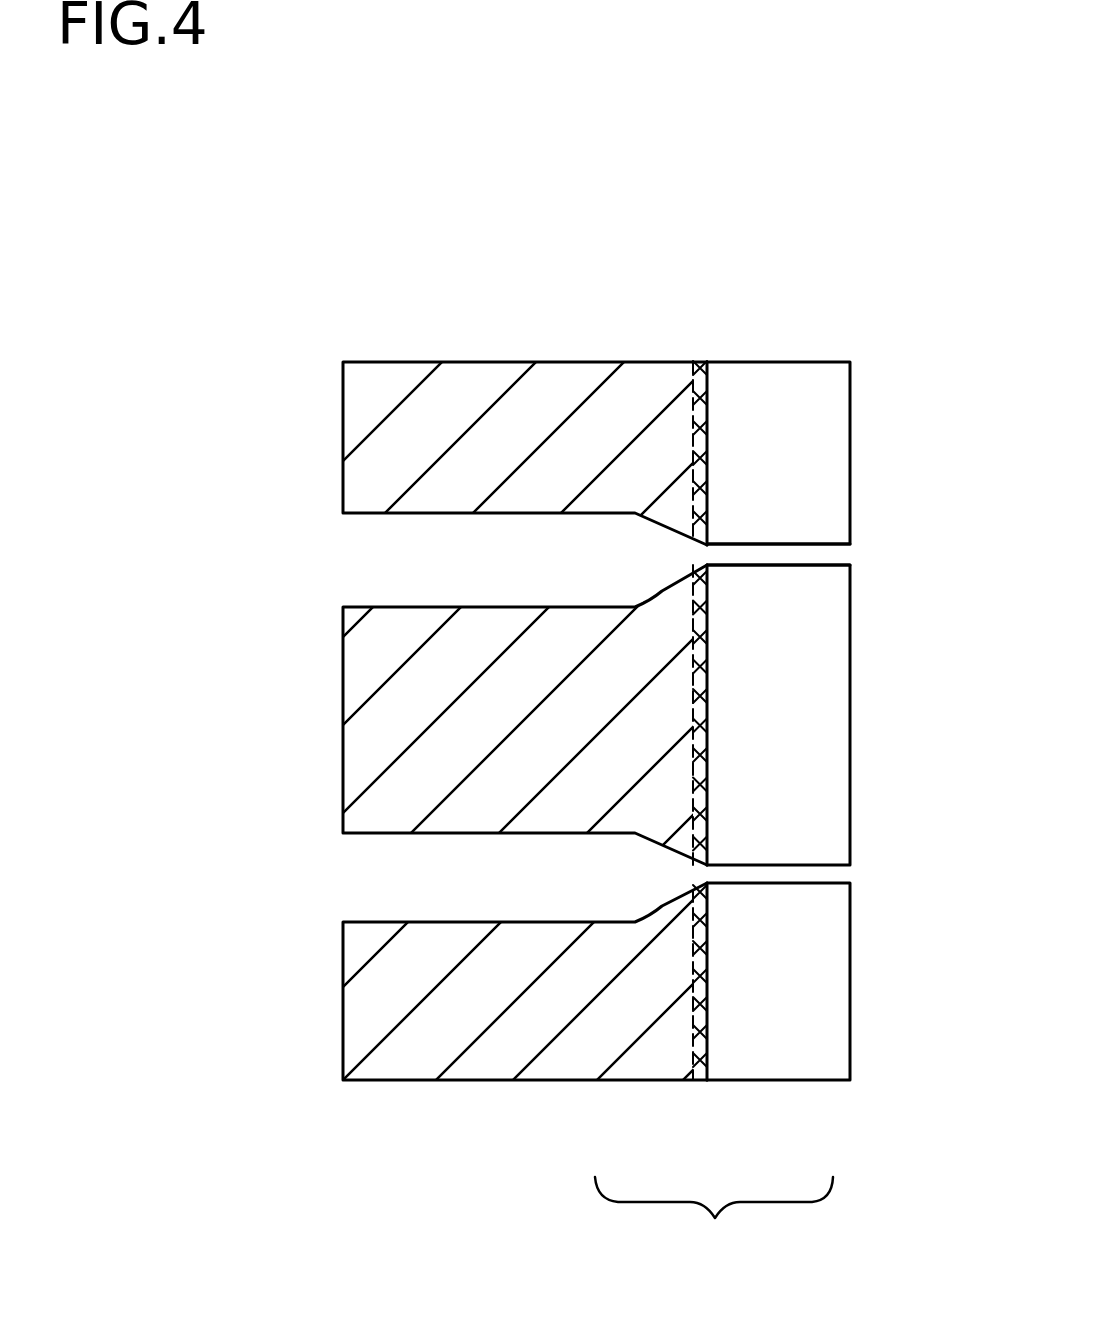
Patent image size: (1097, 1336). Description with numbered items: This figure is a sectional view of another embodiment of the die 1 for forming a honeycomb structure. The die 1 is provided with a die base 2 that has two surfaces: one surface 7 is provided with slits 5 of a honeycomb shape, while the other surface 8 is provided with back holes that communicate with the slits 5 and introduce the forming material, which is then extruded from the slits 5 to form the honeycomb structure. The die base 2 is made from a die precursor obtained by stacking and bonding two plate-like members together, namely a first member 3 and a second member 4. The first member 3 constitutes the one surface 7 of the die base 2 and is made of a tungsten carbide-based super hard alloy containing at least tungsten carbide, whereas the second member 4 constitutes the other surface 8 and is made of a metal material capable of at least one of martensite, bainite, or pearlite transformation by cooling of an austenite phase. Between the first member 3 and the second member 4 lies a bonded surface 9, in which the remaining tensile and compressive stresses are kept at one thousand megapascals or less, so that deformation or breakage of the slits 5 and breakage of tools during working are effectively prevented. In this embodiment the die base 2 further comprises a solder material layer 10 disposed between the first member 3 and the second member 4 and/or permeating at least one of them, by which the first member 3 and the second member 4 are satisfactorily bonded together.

The die for forming a honeycomb structure 1 is at (640, 195).
The die base 2 is at (714, 1225).
The first member 3 is at (776, 1058).
The second member 4 is at (632, 1058).
The slits 5 is at (832, 555).
The one surface 7 is at (921, 362).
The other surface 8 is at (258, 430).
The bonded surface 9 is at (697, 747).
The solder material layer 10 is at (708, 672).